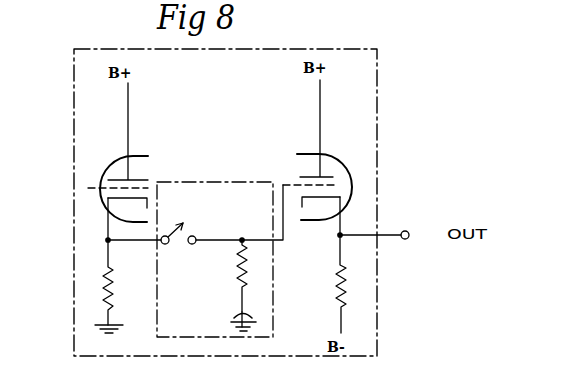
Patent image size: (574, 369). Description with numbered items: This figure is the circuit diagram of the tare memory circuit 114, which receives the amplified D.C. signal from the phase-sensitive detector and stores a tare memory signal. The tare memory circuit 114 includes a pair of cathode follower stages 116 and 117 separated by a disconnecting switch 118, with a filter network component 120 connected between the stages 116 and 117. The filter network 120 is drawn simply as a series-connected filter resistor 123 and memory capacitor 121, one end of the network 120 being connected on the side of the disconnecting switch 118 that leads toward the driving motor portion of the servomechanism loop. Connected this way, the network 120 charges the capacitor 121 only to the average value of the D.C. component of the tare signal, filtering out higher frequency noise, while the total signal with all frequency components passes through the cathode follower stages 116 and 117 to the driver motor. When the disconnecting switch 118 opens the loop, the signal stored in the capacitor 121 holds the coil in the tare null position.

The tare memory circuit 114 is at (367, 87).
The cathode follower stage 116 is at (120, 170).
The cathode follower stage 117 is at (347, 184).
The disconnecting switch 118 is at (172, 222).
The filter network component 120 is at (238, 192).
The memory capacitor 121 is at (250, 306).
The filter resistor 123 is at (247, 270).